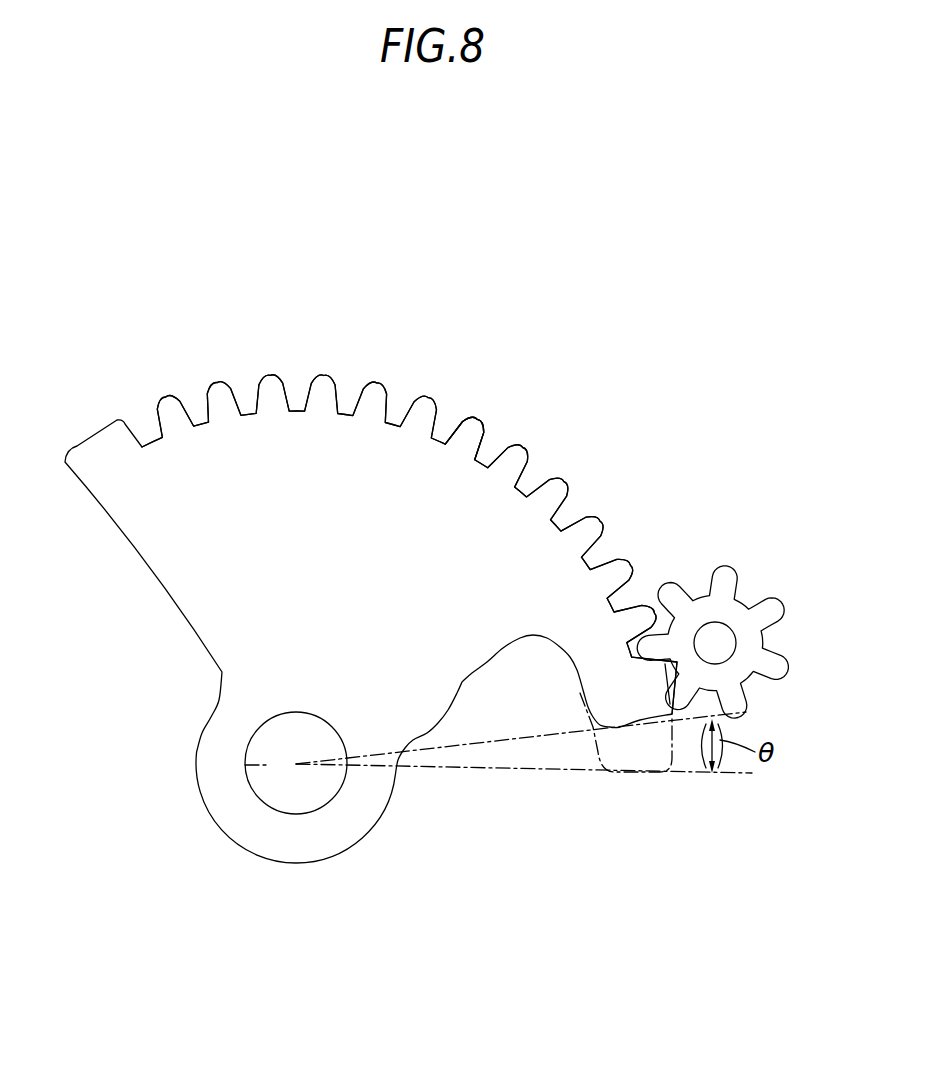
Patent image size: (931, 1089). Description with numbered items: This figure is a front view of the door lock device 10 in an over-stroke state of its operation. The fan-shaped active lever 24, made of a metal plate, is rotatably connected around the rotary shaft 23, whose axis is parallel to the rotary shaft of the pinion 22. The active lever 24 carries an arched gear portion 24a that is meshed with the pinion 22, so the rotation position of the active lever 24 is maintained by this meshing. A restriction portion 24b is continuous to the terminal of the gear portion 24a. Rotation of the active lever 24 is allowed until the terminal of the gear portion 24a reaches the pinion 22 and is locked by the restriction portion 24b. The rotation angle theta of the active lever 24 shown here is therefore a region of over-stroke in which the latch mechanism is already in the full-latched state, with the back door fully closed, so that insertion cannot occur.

The door lock device 10 is at (524, 427).
The pinion 22 is at (725, 568).
The rotary shaft 23 is at (243, 765).
The active lever 24 is at (184, 406).
The gear portion 24a is at (453, 424).
The restriction portion 24b is at (680, 668).